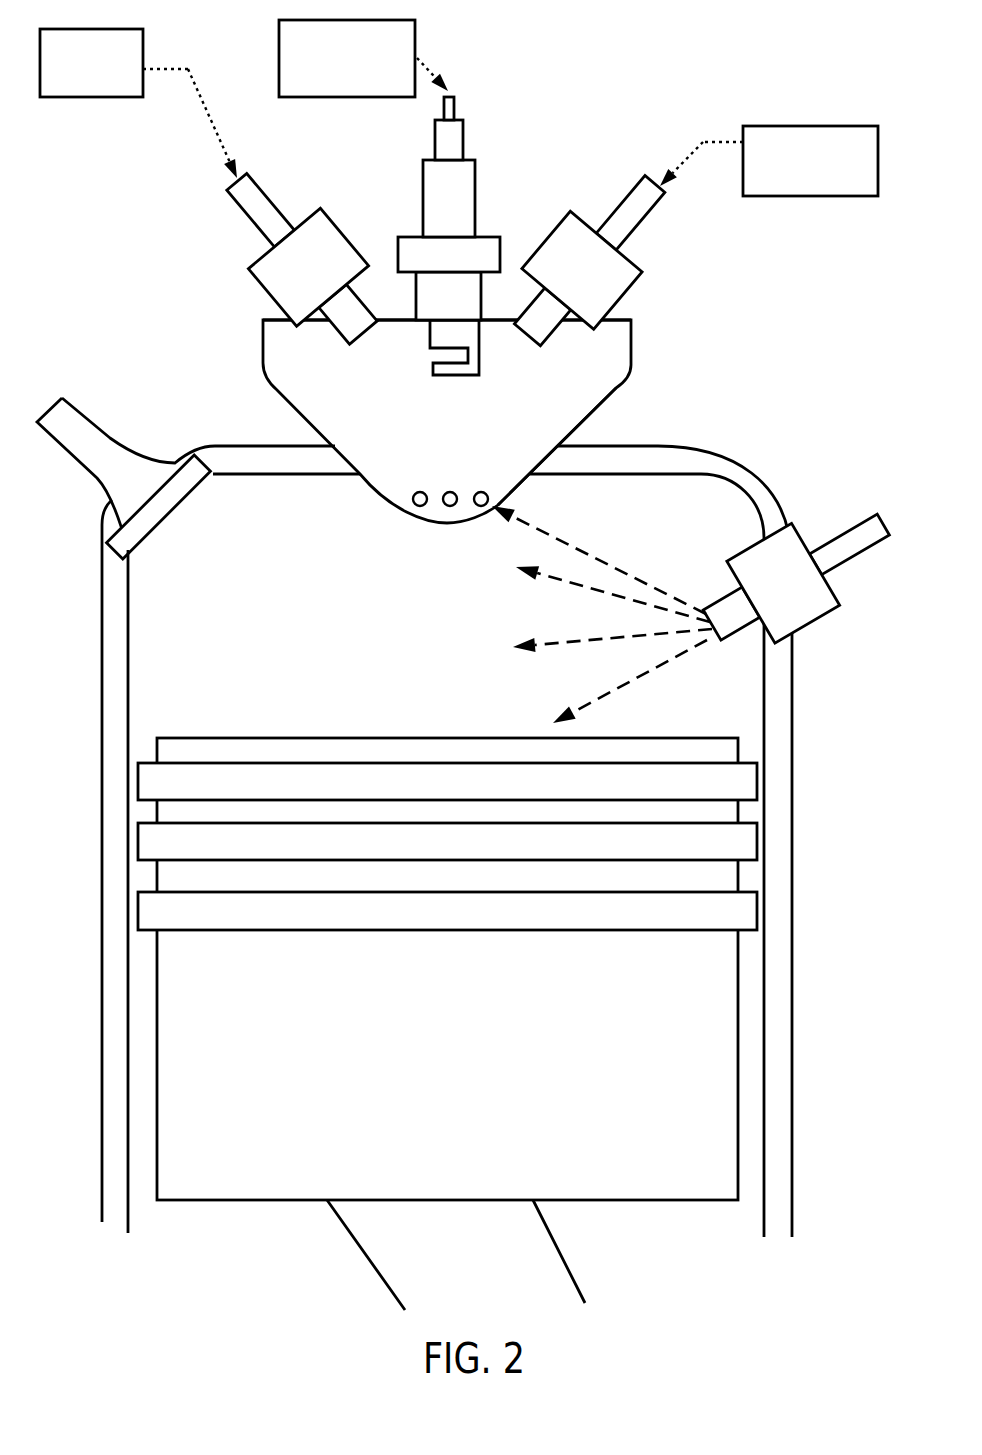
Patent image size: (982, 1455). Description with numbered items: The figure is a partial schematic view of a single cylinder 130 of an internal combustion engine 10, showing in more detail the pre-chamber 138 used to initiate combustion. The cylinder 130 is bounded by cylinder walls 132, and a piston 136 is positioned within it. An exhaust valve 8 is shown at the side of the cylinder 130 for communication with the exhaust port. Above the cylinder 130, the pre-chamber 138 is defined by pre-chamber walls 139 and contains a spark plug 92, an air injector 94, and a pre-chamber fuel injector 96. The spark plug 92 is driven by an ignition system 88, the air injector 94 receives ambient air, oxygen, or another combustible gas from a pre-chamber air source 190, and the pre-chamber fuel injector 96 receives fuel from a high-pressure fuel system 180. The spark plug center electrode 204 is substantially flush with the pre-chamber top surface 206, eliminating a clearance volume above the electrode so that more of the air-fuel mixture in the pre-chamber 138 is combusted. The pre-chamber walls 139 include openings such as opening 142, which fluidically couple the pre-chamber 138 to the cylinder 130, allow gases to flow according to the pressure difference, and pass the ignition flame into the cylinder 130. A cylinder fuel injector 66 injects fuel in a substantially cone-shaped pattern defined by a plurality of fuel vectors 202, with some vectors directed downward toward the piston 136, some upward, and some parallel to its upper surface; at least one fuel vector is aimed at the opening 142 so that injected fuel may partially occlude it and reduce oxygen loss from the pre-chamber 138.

The internal combustion engine 10 is at (844, 53).
The exhaust valve 8 is at (103, 500).
The cylinder fuel injector 66 is at (848, 527).
The ignition system 88 is at (415, 38).
The spark plug 92 is at (423, 160).
The air injector 94 is at (252, 223).
The pre-chamber fuel injector 96 is at (611, 212).
The cylinder 130 is at (268, 653).
The cylinder walls 132 is at (100, 1222).
The piston 136 is at (260, 1200).
The pre-chamber 138 is at (465, 443).
The pre-chamber walls 139 is at (586, 418).
The opening 142 is at (490, 507).
The high-pressure fuel system 180 is at (788, 126).
The pre-chamber air source 190 is at (115, 29).
The fuel vectors 202 is at (659, 535).
The spark plug center electrode 204 is at (430, 333).
The pre-chamber top surface 206 is at (494, 323).